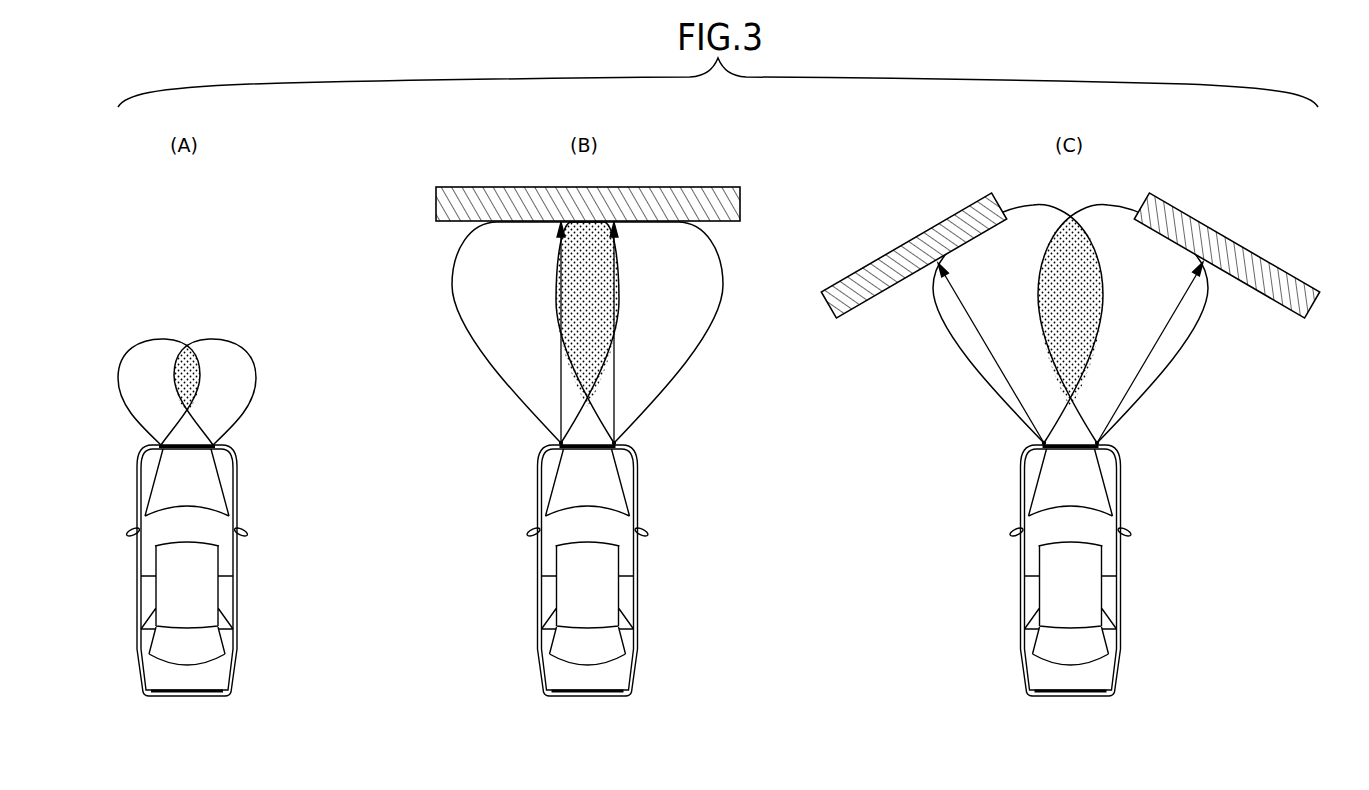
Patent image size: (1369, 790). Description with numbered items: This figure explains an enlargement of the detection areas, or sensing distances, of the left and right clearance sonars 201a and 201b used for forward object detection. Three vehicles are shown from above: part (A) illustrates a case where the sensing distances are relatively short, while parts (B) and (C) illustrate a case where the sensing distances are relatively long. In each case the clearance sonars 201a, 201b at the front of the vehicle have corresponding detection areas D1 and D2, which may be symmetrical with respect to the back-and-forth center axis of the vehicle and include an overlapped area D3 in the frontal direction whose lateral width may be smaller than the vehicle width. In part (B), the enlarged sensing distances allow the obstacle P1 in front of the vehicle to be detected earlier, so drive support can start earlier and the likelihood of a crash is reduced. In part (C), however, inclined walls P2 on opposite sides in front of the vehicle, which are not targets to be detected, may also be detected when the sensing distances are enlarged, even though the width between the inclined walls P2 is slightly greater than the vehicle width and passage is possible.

The obstacle P1 is at (740, 222).
The inclined walls P2 is at (870, 303).
The detection area D1 is at (506, 380).
The detection area D2 is at (675, 380).
The overlapped area D3 is at (570, 328).
The clearance sonar 201a is at (618, 441).
The clearance sonar 201b is at (557, 441).